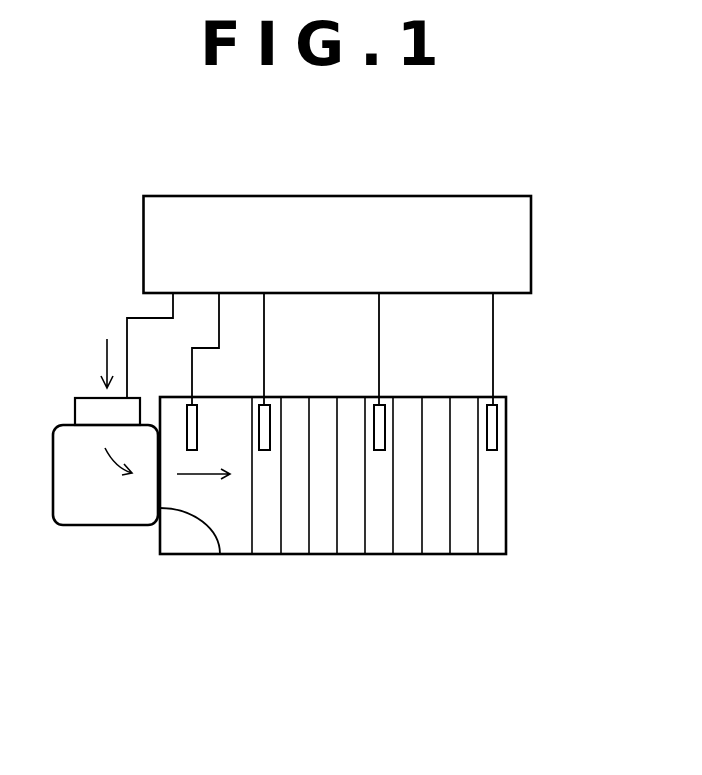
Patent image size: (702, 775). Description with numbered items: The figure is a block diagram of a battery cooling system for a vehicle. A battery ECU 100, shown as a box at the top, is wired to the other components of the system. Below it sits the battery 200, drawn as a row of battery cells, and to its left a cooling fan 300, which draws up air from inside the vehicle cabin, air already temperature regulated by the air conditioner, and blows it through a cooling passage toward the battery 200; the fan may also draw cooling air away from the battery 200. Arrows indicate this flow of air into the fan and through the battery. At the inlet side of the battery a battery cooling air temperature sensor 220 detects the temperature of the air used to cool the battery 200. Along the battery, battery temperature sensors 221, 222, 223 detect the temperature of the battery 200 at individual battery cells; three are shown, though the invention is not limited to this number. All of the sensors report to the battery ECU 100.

The battery ECU 100 is at (298, 196).
The battery 200 is at (328, 565).
The battery cooling air temperature sensor 220 is at (163, 442).
The battery temperature sensor 221 is at (268, 422).
The battery temperature sensor 222 is at (383, 422).
The battery temperature sensor 223 is at (498, 423).
The cooling fan 300 is at (85, 526).